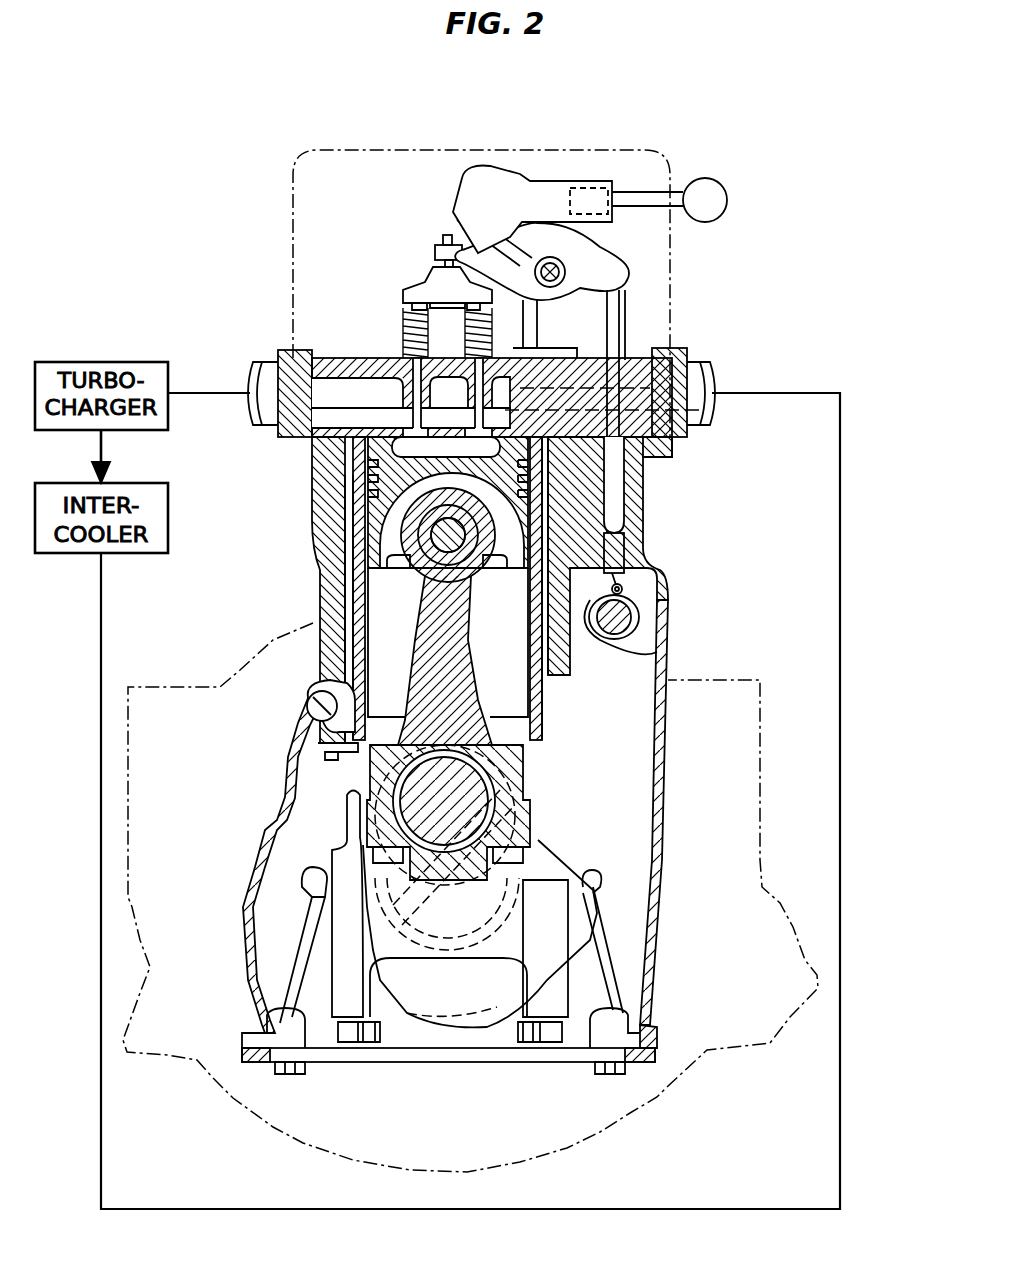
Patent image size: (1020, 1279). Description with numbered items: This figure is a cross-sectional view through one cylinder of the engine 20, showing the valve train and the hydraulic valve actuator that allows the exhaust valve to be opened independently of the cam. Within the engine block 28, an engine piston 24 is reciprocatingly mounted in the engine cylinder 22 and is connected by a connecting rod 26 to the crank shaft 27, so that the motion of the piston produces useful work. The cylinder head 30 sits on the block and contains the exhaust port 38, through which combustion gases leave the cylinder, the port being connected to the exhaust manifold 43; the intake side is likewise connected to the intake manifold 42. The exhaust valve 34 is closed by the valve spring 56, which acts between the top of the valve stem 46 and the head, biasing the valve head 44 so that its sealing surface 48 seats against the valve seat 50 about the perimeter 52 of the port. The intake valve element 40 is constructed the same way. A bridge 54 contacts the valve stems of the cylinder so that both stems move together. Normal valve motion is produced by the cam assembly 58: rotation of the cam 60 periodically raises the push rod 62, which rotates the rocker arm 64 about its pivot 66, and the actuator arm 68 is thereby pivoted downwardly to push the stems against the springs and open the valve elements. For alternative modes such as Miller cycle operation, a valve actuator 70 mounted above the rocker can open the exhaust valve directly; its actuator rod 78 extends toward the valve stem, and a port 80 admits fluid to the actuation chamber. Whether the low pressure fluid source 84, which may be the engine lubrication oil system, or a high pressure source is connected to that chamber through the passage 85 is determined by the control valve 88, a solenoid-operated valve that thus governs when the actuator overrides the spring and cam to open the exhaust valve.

The engine 20 is at (676, 527).
The engine cylinder 22 is at (368, 628).
The engine piston 24 is at (373, 555).
The connecting rod 26 is at (460, 688).
The crank shaft 27 is at (567, 882).
The engine block 28 is at (335, 667).
The cylinder head 30 is at (672, 437).
The exhaust valve 34 is at (580, 352).
The exhaust port 38 is at (650, 465).
The intake valve element 40 is at (403, 370).
The intake manifold 42 is at (660, 413).
The exhaust manifold 43 is at (270, 382).
The valve head 44 is at (405, 450).
The valve stem 46 is at (560, 345).
The sealing surface 48 is at (372, 503).
The valve seat 50 is at (378, 550).
The perimeter 52 is at (405, 425).
The bridge 54 is at (432, 290).
The valve spring 56 is at (467, 318).
The cam assembly 58 is at (643, 272).
The cam 60 is at (657, 652).
The push rod 62 is at (625, 576).
The rocker arm 64 is at (623, 258).
The pivot 66 is at (553, 266).
The actuator arm 68 is at (440, 248).
The valve actuator 70 is at (503, 165).
The actuator rod 78 is at (466, 232).
The port 80 is at (616, 192).
The low pressure fluid source 84 is at (710, 192).
The passage 85 is at (545, 268).
The control valve 88 is at (590, 197).